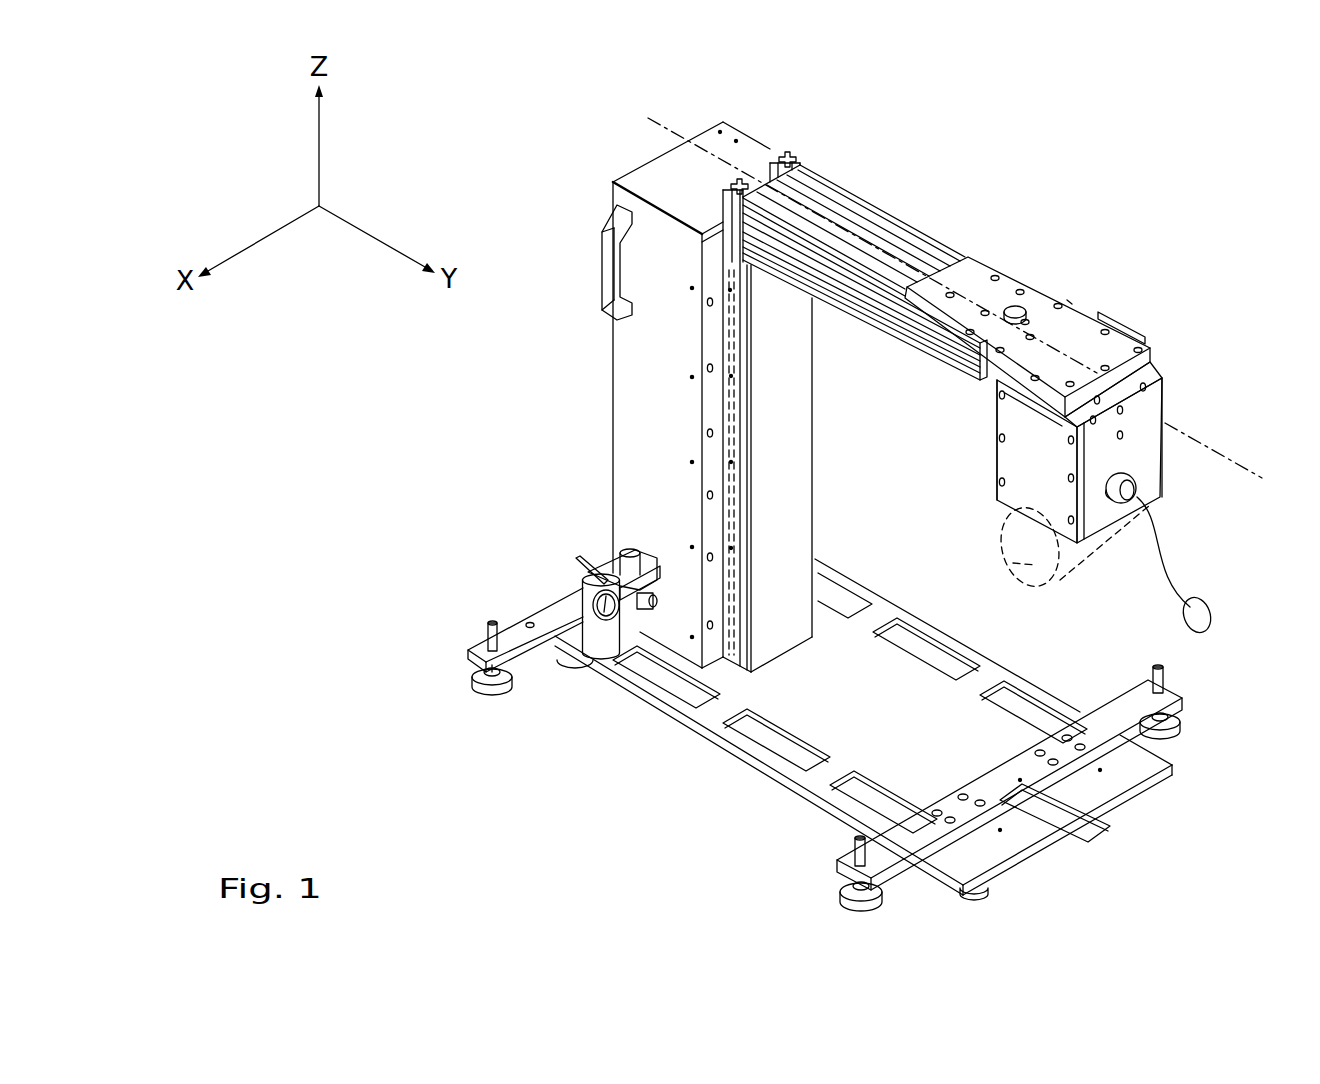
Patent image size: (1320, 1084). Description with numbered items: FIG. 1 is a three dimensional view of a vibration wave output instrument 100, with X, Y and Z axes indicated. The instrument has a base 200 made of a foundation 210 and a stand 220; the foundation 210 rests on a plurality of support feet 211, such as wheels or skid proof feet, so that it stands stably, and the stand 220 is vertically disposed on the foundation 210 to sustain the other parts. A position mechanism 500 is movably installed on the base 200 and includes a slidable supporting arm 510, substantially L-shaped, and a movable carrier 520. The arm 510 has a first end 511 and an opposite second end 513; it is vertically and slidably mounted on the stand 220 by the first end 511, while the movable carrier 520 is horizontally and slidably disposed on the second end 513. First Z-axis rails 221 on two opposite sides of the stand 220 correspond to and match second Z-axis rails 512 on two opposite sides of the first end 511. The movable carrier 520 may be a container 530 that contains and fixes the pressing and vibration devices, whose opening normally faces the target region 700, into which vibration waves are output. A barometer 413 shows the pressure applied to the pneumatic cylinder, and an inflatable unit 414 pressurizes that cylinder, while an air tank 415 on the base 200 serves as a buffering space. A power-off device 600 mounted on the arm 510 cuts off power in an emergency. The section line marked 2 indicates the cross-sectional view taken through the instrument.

The vibration wave output instrument 100 is at (1250, 185).
The base 200 is at (825, 735).
The foundation 210 is at (717, 712).
The support feet 211 is at (492, 700).
The stand 220 is at (633, 480).
The first Z-axis rail 221 is at (733, 397).
The barometer 413 is at (1122, 497).
The inflatable unit 414 is at (1203, 613).
The air tank 415 is at (590, 580).
The position mechanism 500 is at (960, 468).
The slidable supporting arm 510 is at (757, 262).
The first end 511 is at (772, 182).
The second Z-axis rail 512 is at (788, 166).
The second end 513 is at (1117, 340).
The movable carrier 520 is at (986, 430).
The container 530 is at (1153, 393).
The power-off device 600 is at (1010, 308).
The target region 700 is at (993, 588).
The section line 2- 2 is at (630, 118).